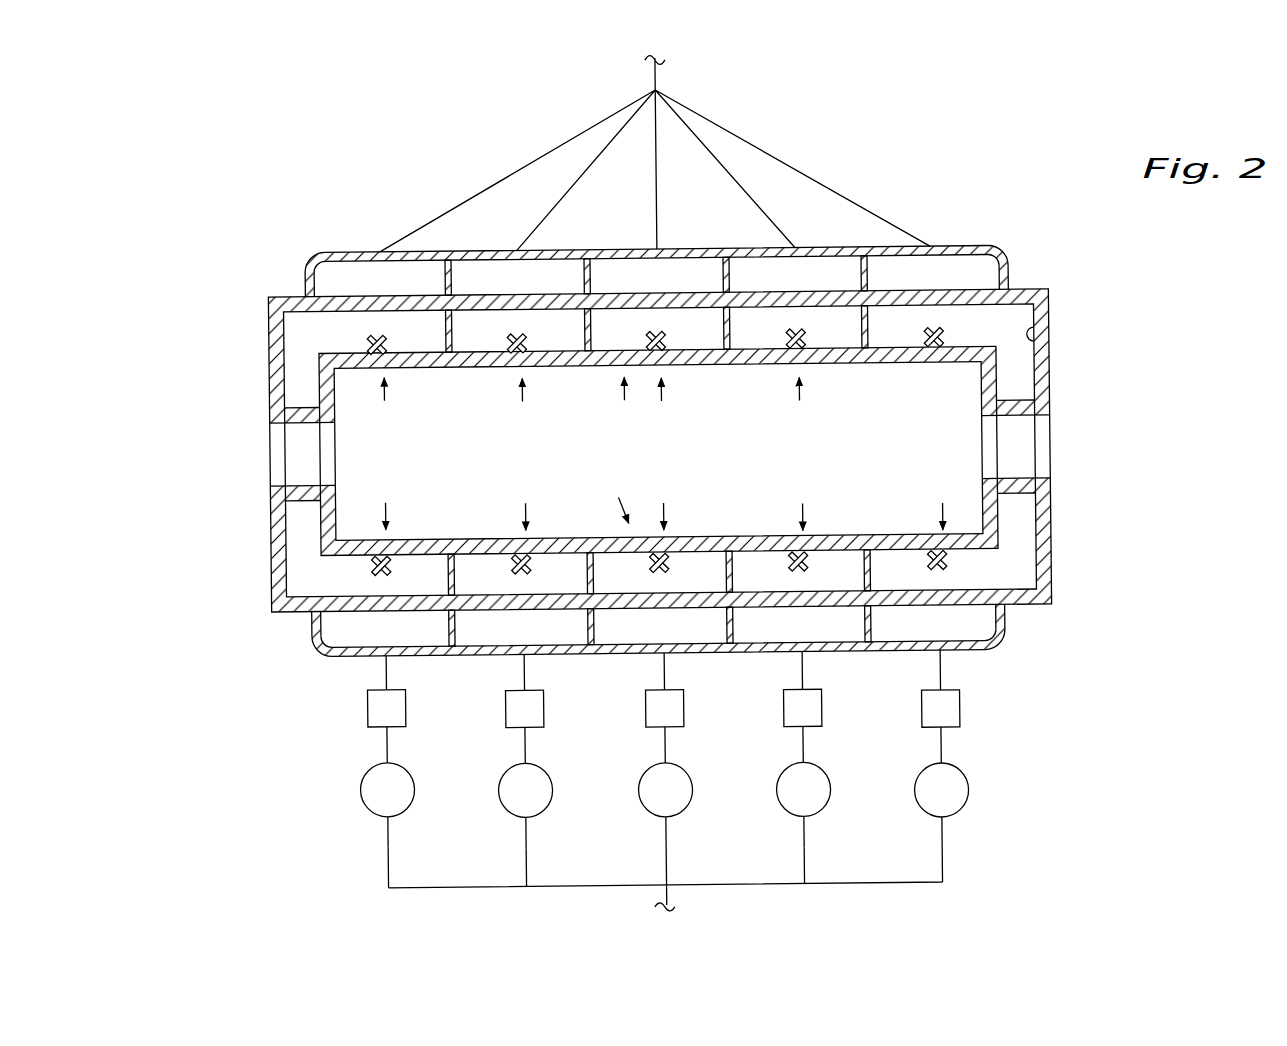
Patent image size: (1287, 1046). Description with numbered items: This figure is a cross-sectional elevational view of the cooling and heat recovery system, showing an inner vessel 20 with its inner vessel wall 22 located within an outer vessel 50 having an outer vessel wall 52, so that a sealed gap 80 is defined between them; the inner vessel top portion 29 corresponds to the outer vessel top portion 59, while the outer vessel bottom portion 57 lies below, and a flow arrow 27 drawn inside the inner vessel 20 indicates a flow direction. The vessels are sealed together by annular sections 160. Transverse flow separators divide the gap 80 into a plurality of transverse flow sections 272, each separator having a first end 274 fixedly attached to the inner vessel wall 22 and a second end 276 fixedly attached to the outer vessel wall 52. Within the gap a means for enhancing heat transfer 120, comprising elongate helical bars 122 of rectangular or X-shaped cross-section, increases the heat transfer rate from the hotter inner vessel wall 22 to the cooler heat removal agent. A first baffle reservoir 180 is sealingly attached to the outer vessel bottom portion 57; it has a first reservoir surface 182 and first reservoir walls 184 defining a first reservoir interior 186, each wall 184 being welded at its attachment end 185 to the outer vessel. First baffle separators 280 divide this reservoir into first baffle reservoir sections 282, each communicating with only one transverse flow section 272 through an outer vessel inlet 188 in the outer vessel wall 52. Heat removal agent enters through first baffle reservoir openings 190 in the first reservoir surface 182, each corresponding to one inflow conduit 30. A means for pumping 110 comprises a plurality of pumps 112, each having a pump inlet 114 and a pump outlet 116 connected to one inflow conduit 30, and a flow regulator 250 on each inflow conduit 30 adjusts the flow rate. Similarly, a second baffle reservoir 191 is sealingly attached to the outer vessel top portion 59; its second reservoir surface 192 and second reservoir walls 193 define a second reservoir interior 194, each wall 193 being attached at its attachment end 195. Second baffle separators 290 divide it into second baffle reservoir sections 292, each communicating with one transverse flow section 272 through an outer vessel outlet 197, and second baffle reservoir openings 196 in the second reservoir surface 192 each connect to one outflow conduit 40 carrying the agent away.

The inner vessel 20 is at (321, 373).
The inner vessel wall 22 is at (300, 404).
The flow direction arrow 27 is at (616, 495).
The top portion 29 is at (617, 407).
The inflow conduit 30 is at (963, 869).
The outflow conduit 40 is at (810, 177).
The outer vessel 50 is at (1050, 371).
The outer vessel wall 52 is at (1042, 338).
The bottom portion 57 is at (298, 656).
The top portion 59 is at (246, 305).
The gap 80 is at (305, 582).
The means for pumping 110 is at (956, 807).
The pump 112 is at (993, 794).
The pump inlet 114 is at (976, 834).
The pump outlet 116 is at (973, 745).
The means for enhancing heat transfer 120 is at (676, 454).
The helical bar 122 is at (669, 344).
The annular section 160 is at (1003, 424).
The first baffle reservoir 180 is at (303, 682).
The first reservoir surface 182 is at (353, 657).
The first reservoir wall 184 is at (310, 621).
The attachment end 185 is at (1005, 626).
The first reservoir interior 186 is at (316, 640).
The outer vessel inlet 188 is at (940, 595).
The first baffle reservoir opening 190 is at (981, 670).
The second baffle reservoir 191 is at (338, 160).
The second reservoir surface 192 is at (330, 252).
The second reservoir wall 193 is at (306, 272).
The second reservoir interior 194 is at (312, 253).
The attachment end 195 is at (1011, 278).
The second baffle reservoir opening 196 is at (936, 249).
The outer vessel outlet 197 is at (938, 311).
The flow regulator 250 is at (989, 708).
The transverse flow section 272 is at (999, 338).
The first end 274 is at (850, 342).
The second end 276 is at (858, 316).
The first baffle separator 280 is at (908, 630).
The first baffle reservoir section 282 is at (989, 643).
The second baffle separator 290 is at (909, 278).
The second baffle reservoir section 292 is at (986, 291).